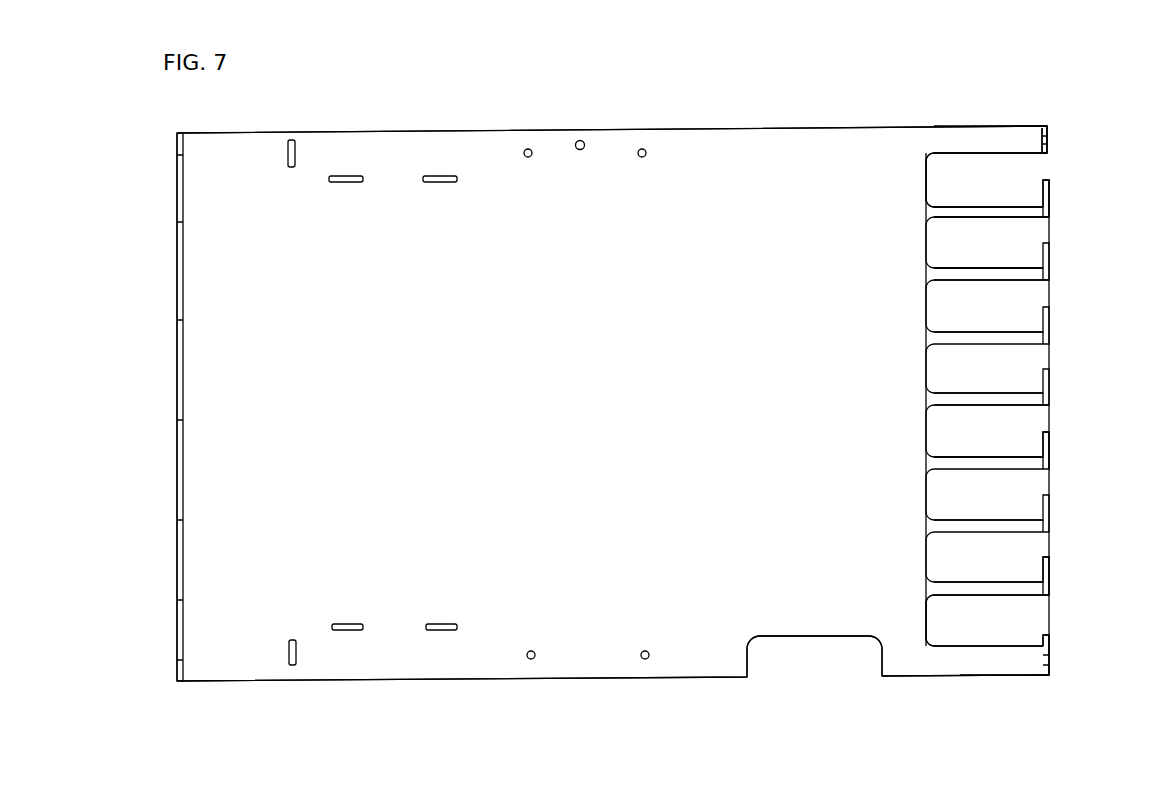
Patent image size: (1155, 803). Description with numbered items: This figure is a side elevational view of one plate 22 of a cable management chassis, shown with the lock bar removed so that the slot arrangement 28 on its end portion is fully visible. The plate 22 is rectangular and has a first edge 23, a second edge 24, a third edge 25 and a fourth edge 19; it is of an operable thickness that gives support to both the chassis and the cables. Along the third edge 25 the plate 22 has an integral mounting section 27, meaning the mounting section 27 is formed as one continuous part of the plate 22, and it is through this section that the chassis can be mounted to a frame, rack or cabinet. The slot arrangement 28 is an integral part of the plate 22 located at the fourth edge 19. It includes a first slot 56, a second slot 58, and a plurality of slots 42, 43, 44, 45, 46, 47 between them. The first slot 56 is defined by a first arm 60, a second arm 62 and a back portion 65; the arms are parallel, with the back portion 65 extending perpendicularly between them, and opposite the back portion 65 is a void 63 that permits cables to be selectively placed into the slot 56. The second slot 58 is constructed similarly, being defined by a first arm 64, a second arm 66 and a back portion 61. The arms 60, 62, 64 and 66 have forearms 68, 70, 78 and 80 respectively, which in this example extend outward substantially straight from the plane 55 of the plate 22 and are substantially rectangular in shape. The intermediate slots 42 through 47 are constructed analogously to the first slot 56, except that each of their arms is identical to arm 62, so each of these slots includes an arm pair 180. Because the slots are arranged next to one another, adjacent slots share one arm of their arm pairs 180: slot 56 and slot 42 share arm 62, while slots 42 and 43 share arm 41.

The fourth edge 19 is at (1050, 445).
The plate 22 is at (398, 130).
The first edge 23 is at (583, 129).
The second edge 24 is at (398, 681).
The third edge 25 is at (178, 322).
The mounting section 27 is at (178, 436).
The slot arrangement 28 is at (1073, 364).
The arm 41 is at (982, 282).
The slot 42 is at (992, 268).
The slot 43 is at (993, 332).
The slot 44 is at (995, 393).
The slot 45 is at (997, 457).
The slot 46 is at (1003, 520).
The slot 47 is at (1005, 582).
The plane 55 is at (538, 408).
The first slot 56 is at (995, 153).
The second slot 58 is at (1000, 646).
The first arm 60 is at (952, 127).
The back portion 61 is at (926, 168).
The second arm 62 is at (970, 207).
The void 63 is at (1049, 185).
The first arm 64 is at (968, 677).
The back portion 65 is at (926, 620).
The second arm 66 is at (975, 595).
The forearm 68 is at (1008, 127).
The forearm 70 is at (965, 213).
The forearm 78 is at (988, 677).
The forearm 80 is at (1012, 594).
The arm pair 180 is at (983, 267).